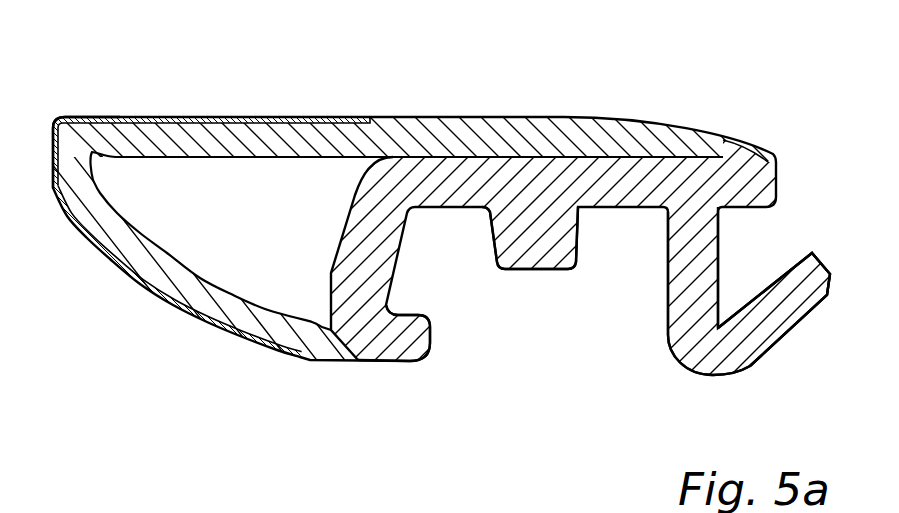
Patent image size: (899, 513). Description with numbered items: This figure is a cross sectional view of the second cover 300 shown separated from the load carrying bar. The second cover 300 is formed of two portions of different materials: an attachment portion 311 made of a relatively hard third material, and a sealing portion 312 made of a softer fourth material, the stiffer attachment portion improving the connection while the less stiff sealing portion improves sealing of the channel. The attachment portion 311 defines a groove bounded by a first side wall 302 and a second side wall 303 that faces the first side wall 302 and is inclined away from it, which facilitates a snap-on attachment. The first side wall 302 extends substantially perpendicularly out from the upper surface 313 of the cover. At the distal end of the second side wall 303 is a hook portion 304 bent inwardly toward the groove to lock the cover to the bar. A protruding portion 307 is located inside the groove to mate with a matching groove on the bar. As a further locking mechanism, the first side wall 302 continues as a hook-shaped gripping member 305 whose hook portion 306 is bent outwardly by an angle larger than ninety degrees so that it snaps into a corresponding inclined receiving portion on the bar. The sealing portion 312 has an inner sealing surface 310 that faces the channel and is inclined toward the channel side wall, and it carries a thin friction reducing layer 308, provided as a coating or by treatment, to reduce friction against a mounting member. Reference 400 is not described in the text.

The second cover 300 is at (552, 116).
The first side wall 302 is at (668, 277).
The second side wall 303 is at (390, 250).
The hook portion 304 is at (413, 350).
The hook-shaped gripping member 305 is at (810, 310).
The hook portion 306 is at (810, 310).
The protruding portion 307 is at (533, 273).
The friction reducing layer 308 is at (65, 122).
The inner sealing surface 310 is at (143, 290).
The attachment portion 311 is at (682, 355).
The sealing portion 312 is at (442, 116).
The upper surface 313 is at (488, 116).
The substrate 400 is at (245, 506).